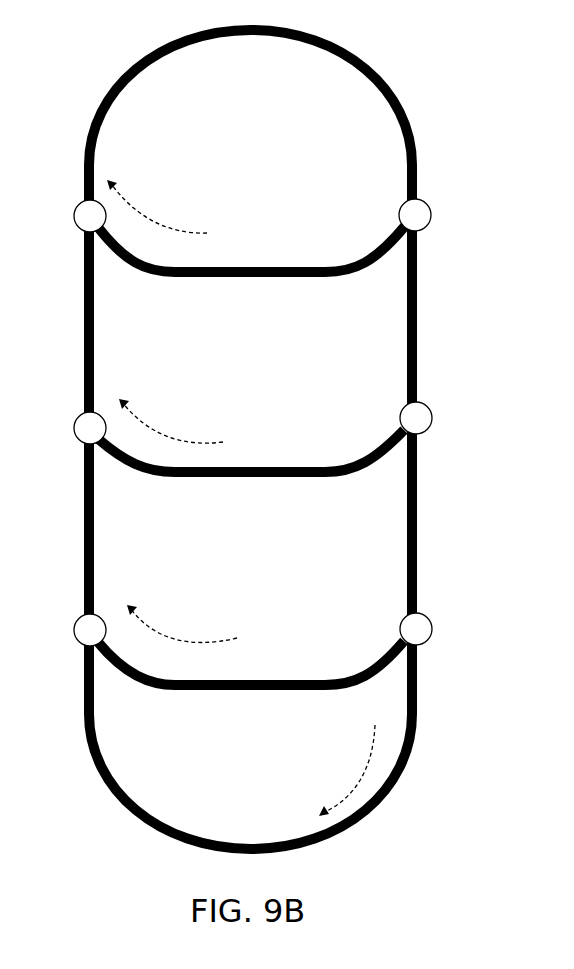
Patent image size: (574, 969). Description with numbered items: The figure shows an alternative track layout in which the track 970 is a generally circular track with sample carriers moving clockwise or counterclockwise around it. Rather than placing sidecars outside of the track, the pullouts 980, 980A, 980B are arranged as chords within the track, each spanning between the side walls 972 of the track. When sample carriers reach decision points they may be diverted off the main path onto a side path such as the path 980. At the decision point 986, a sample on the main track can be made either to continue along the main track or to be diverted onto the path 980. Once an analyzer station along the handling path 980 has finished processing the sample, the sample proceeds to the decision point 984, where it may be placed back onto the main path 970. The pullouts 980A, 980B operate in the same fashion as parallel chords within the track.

The track 970 is at (170, 65).
The side wall 972 is at (405, 497).
The pullout 980 is at (255, 462).
The pullout 980A is at (260, 680).
The pullout 980B is at (325, 265).
The decision point 984 is at (75, 445).
The decision point 986 is at (442, 433).